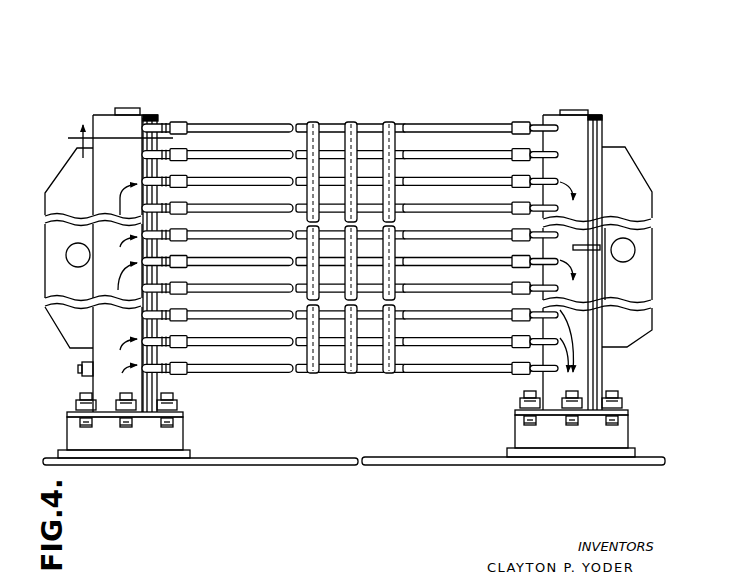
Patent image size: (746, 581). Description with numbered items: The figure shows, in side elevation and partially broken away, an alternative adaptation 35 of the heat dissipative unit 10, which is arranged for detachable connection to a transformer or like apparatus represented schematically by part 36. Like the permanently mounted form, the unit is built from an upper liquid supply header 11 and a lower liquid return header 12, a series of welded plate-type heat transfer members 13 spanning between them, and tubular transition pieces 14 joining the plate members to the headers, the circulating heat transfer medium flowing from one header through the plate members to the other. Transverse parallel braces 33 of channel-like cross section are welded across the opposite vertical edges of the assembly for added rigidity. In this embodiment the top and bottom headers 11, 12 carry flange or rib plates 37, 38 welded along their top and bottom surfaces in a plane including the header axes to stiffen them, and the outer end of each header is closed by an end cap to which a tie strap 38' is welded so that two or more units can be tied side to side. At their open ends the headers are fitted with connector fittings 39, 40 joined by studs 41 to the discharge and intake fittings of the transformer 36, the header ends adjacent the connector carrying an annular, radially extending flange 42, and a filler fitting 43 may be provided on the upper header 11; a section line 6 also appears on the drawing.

The section line 6- 6 is at (120, 141).
The unit 10 is at (350, 232).
The upper liquid supply header 11 is at (116, 128).
The lower liquid return header 12 is at (580, 130).
The plate-type heat transfer members 13 is at (222, 178).
The tubular transition pieces 14 is at (143, 163).
The transverse parallel braces 33 is at (349, 232).
The alternative unit adaptation 35 is at (311, 112).
The transformer 36 is at (297, 457).
The flange or rib plate 37 is at (66, 188).
The flange or rib plate 38 is at (598, 232).
The tie strap 38' is at (346, 88).
The connector fitting 39 is at (184, 432).
The connector fitting 40 is at (517, 440).
The studs 41 is at (177, 395).
The annular radially extending flange 42 is at (67, 412).
The filler fitting 43 is at (82, 362).